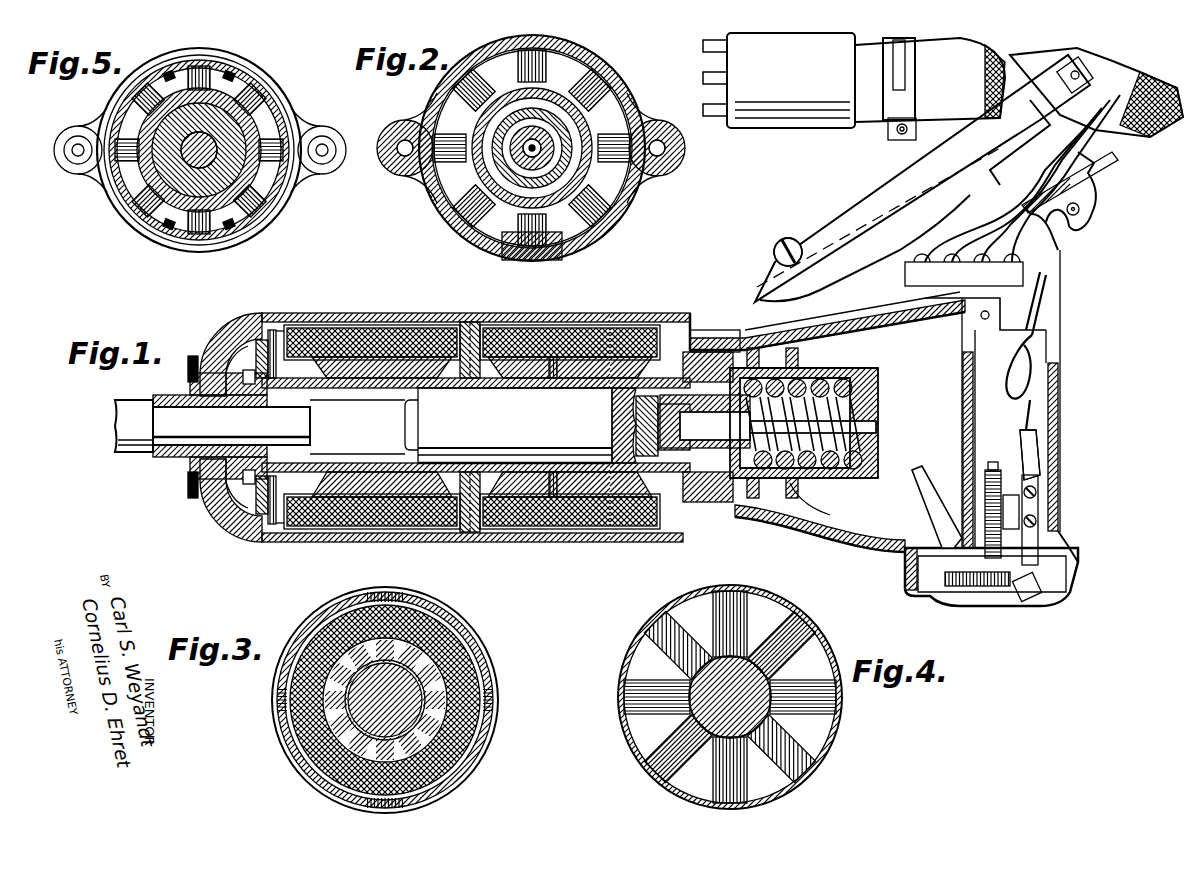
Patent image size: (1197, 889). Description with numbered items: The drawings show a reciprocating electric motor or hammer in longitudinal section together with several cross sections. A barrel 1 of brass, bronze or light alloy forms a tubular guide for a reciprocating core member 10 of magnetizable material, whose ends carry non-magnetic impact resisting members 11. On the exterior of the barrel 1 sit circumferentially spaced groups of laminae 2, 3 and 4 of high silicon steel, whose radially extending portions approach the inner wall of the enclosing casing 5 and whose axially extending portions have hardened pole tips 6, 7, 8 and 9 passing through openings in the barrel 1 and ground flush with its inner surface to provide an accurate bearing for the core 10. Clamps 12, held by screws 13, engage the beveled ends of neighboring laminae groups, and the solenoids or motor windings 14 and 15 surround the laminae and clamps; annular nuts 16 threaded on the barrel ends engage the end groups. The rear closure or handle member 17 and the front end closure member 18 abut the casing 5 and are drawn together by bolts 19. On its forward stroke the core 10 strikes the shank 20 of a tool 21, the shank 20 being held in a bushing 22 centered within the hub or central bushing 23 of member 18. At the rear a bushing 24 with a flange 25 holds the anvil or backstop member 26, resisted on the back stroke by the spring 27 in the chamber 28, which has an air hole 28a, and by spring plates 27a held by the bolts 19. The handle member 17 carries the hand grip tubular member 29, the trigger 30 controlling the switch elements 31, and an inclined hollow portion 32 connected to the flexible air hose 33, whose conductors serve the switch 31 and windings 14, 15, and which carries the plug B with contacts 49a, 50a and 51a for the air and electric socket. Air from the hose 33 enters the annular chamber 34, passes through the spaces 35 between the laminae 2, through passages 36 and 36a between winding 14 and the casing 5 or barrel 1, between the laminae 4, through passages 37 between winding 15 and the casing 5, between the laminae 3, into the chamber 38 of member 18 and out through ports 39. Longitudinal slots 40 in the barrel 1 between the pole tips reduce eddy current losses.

In FIG. 3, the barrel 1 is at (481, 736).
In FIG. 4, the barrel 1 is at (635, 737).
In FIG. 1, the barrel 1 is at (362, 390).
In FIG. 2, the group of laminae 2 is at (529, 148).
In FIG. 3, the group of laminae 2 is at (385, 679).
In FIG. 1, the group of laminae 2 is at (645, 325).
In FIG. 5, the group of laminae 3 is at (199, 150).
In FIG. 1, the group of laminae 3 is at (310, 340).
In FIG. 4, the group of laminae 4 is at (718, 699).
In FIG. 1, the group of laminae 4 is at (470, 320).
In FIG. 3, the casing 5 is at (385, 679).
In FIG. 4, the casing 5 is at (730, 678).
In FIG. 1, the casing 5 is at (212, 312).
In FIG. 1, the pole tip 6 is at (335, 392).
In FIG. 1, the pole tip 7 is at (420, 392).
In FIG. 1, the pole tip 8 is at (500, 392).
In FIG. 1, the pole tip 9 is at (620, 395).
In FIG. 3, the reciprocating core member 10 is at (359, 687).
In FIG. 4, the reciprocating core member 10 is at (716, 724).
In FIG. 1, the reciprocating core member 10 is at (515, 370).
In FIG. 1, the end member 11 is at (376, 315).
In FIG. 3, the clamp 12 is at (342, 656).
In FIG. 1, the clamp 12 is at (400, 320).
In FIG. 1, the screw 13 is at (340, 365).
In FIG. 3, the motor winding 14 is at (385, 679).
In FIG. 4, the motor winding 14 is at (748, 679).
In FIG. 1, the motor winding 14 is at (610, 325).
In FIG. 1, the motor winding 15 is at (412, 340).
In FIG. 1, the annular nut 16 is at (272, 330).
In FIG. 2, the rear closure or handle member 17 is at (532, 189).
In FIG. 1, the rear closure or handle member 17 is at (760, 520).
In FIG. 5, the front end closure member 18 is at (214, 190).
In FIG. 1, the front end closure member 18 is at (200, 352).
In FIG. 5, the bolt 19 is at (196, 158).
In FIG. 2, the bolt 19 is at (532, 189).
In FIG. 5, the tool shank 20 is at (199, 184).
In FIG. 1, the tool shank 20 is at (231, 426).
In FIG. 1, the tool 21 is at (128, 423).
In FIG. 5, the bushing 22 is at (214, 190).
In FIG. 1, the bushing 22 is at (188, 392).
In FIG. 5, the hub or central bushing 23 is at (164, 150).
In FIG. 1, the hub or central bushing 23 is at (243, 352).
In FIG. 2, the bushing 24 is at (516, 148).
In FIG. 1, the bushing 24 is at (700, 340).
In FIG. 1, the flange 25 is at (764, 258).
In FIG. 2, the anvil or backstop member 26 is at (532, 189).
In FIG. 1, the anvil or backstop member 26 is at (805, 372).
In FIG. 1, the spring 27 is at (828, 418).
In FIG. 1, the spring plate 27a is at (832, 515).
In FIG. 1, the chamber 28 is at (815, 482).
In FIG. 1, the air hole 28a is at (878, 428).
In FIG. 1, the hand grip tubular member 29 is at (1060, 425).
In FIG. 1, the trigger 30 is at (930, 497).
In FIG. 1, the switch 31 is at (1050, 545).
In FIG. 1, the inclined hollow portion 32 is at (870, 230).
In FIG. 1, the air hose or conduit 33 is at (960, 105).
In FIG. 1, the annular chamber 34 is at (715, 350).
In FIG. 2, the space 35 is at (574, 210).
In FIG. 4, the passage 36 is at (760, 726).
In FIG. 1, the passage 36 is at (690, 330).
In FIG. 3, the passage 36a is at (440, 734).
In FIG. 4, the passage 36a is at (751, 697).
In FIG. 1, the passage 36a is at (735, 540).
In FIG. 1, the passage 37 is at (300, 330).
In FIG. 1, the chamber or annular passage 38 is at (262, 340).
In FIG. 5, the port 39 is at (254, 173).
In FIG. 1, the port 39 is at (240, 320).
In FIG. 3, the slot 40 is at (404, 705).
In FIG. 1, the plug contact 49a is at (710, 72).
In FIG. 1, the plug contact 50a is at (708, 42).
In FIG. 1, the plug contact 51a is at (712, 118).
In FIG. 1, the plug B is at (791, 80).